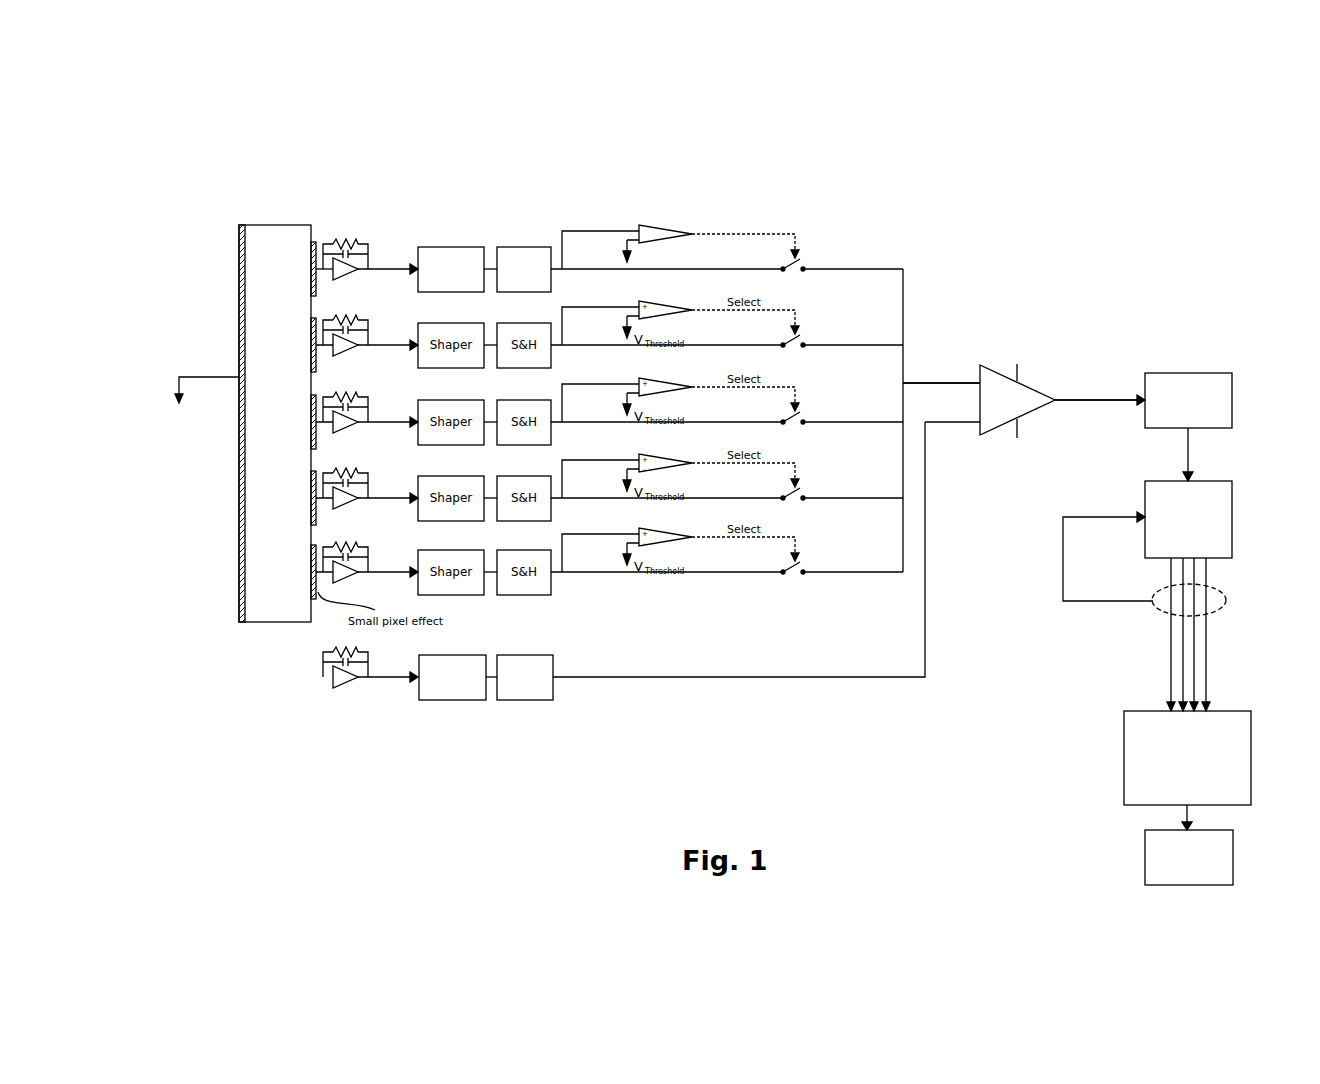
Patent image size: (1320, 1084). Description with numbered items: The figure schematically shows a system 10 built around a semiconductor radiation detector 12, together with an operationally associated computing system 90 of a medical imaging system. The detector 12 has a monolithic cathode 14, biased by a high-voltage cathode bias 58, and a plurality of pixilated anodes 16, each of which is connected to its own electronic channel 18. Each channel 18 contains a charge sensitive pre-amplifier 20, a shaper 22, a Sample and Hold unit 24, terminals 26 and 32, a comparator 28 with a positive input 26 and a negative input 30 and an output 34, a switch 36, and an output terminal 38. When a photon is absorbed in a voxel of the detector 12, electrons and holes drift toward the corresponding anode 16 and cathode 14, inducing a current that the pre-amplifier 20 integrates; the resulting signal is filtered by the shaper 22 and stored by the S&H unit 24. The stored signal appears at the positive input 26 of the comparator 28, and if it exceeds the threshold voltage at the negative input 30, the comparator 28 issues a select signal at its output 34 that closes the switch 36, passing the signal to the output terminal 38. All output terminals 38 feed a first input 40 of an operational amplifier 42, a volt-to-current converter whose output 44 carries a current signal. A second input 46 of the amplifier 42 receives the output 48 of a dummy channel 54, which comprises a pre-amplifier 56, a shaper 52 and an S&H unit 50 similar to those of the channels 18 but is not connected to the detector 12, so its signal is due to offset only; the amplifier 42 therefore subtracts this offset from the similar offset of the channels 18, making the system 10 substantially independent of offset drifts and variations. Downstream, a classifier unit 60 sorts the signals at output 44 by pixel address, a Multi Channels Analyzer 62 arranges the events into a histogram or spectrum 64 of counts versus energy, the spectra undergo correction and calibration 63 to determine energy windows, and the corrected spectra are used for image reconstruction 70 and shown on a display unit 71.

The system 10 is at (442, 178).
The radiation detector 12 is at (276, 230).
The monolithic cathode 14 is at (237, 245).
The pixilated anodes 16 is at (318, 224).
The electronic channel 18 is at (383, 266).
The charge sensitive pre-amplifier 20 is at (347, 283).
The shaper 22 is at (440, 247).
The Sample & Hold unit 24 is at (522, 247).
The positive input terminal 26 is at (597, 231).
The comparator 28 is at (665, 225).
The negative input 30 is at (631, 264).
The terminal 32 is at (763, 270).
The comparator output 34 is at (782, 232).
The switch 36 is at (806, 262).
The output terminal 38 is at (877, 267).
The first input 40 is at (938, 380).
The operational amplifier 42 is at (1025, 370).
The output 44 is at (1113, 395).
The second input 46 is at (978, 430).
The dummy channel output 48 is at (795, 682).
The S&H unit 50 is at (522, 701).
The shaper 52 is at (445, 701).
The dummy channel 54 is at (390, 681).
The charge sensitive pre-amplifier 56 is at (340, 690).
The cathode bias 58 is at (200, 376).
The classifier unit 60 is at (1232, 392).
The Multi Channels Analyzer 62 is at (1232, 500).
The correction and/or calibration 63 is at (1062, 552).
The histogram 64 is at (1182, 655).
The image reconstruction 70 is at (1127, 780).
The display unit 71 is at (1145, 860).
The computing system 90 is at (1173, 324).